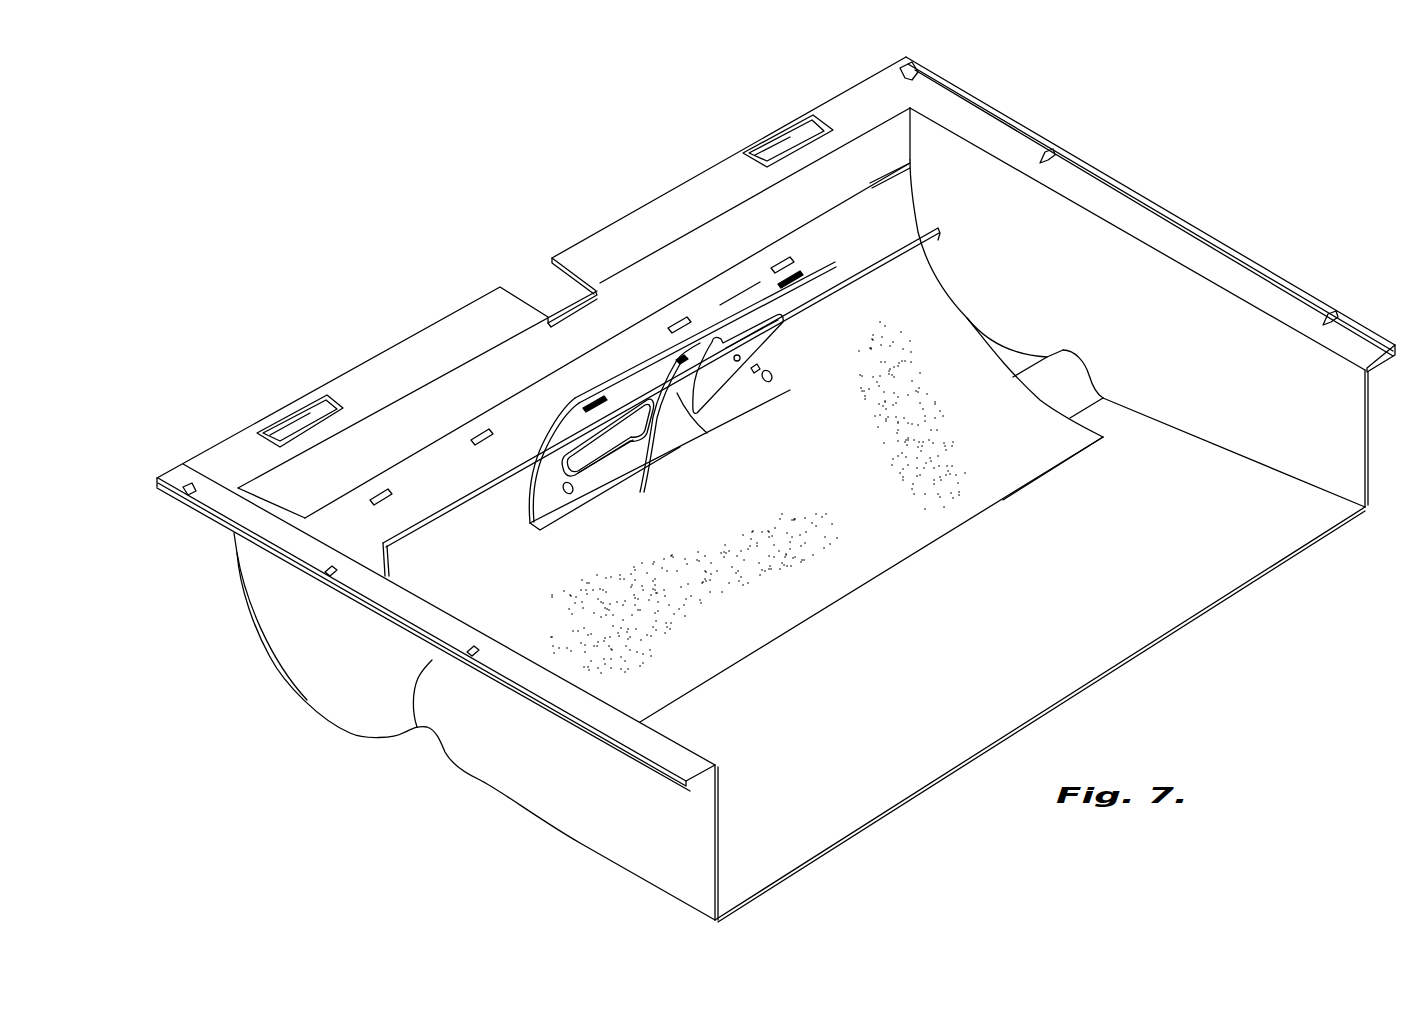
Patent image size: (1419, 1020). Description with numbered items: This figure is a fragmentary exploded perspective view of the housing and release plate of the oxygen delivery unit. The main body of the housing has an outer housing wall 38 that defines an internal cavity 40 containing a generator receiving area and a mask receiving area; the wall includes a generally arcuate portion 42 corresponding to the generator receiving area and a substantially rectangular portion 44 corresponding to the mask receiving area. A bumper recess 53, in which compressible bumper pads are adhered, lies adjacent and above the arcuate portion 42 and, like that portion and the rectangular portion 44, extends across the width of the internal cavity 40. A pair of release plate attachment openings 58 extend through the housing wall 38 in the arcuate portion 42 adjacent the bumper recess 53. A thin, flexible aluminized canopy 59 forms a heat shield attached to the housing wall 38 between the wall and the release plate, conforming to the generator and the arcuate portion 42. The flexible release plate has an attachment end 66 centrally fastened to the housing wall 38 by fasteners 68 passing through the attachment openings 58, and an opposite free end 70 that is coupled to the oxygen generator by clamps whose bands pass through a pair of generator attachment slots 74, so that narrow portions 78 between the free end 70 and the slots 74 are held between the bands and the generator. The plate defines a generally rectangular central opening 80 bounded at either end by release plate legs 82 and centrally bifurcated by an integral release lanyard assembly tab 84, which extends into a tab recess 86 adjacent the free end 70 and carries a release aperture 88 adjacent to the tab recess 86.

The outer housing wall 38 is at (417, 727).
The internal cavity 40 is at (1065, 253).
The arcuate portion 42 is at (313, 677).
The rectangular portion 44 is at (590, 822).
The bumper recess 53 is at (873, 183).
The release plate attachment openings 58 is at (483, 430).
The canopy 59 is at (838, 486).
The attachment end 66 is at (619, 495).
The fasteners 68 is at (568, 495).
The free end 70 is at (777, 313).
The generator attachment slots 74 is at (560, 421).
The narrow portions 78 is at (597, 397).
The central opening 80 is at (617, 440).
The release plate legs 82 is at (523, 453).
The release lanyard assembly tab 84 is at (707, 435).
The tab recess 86 is at (733, 300).
The release aperture 88 is at (675, 358).